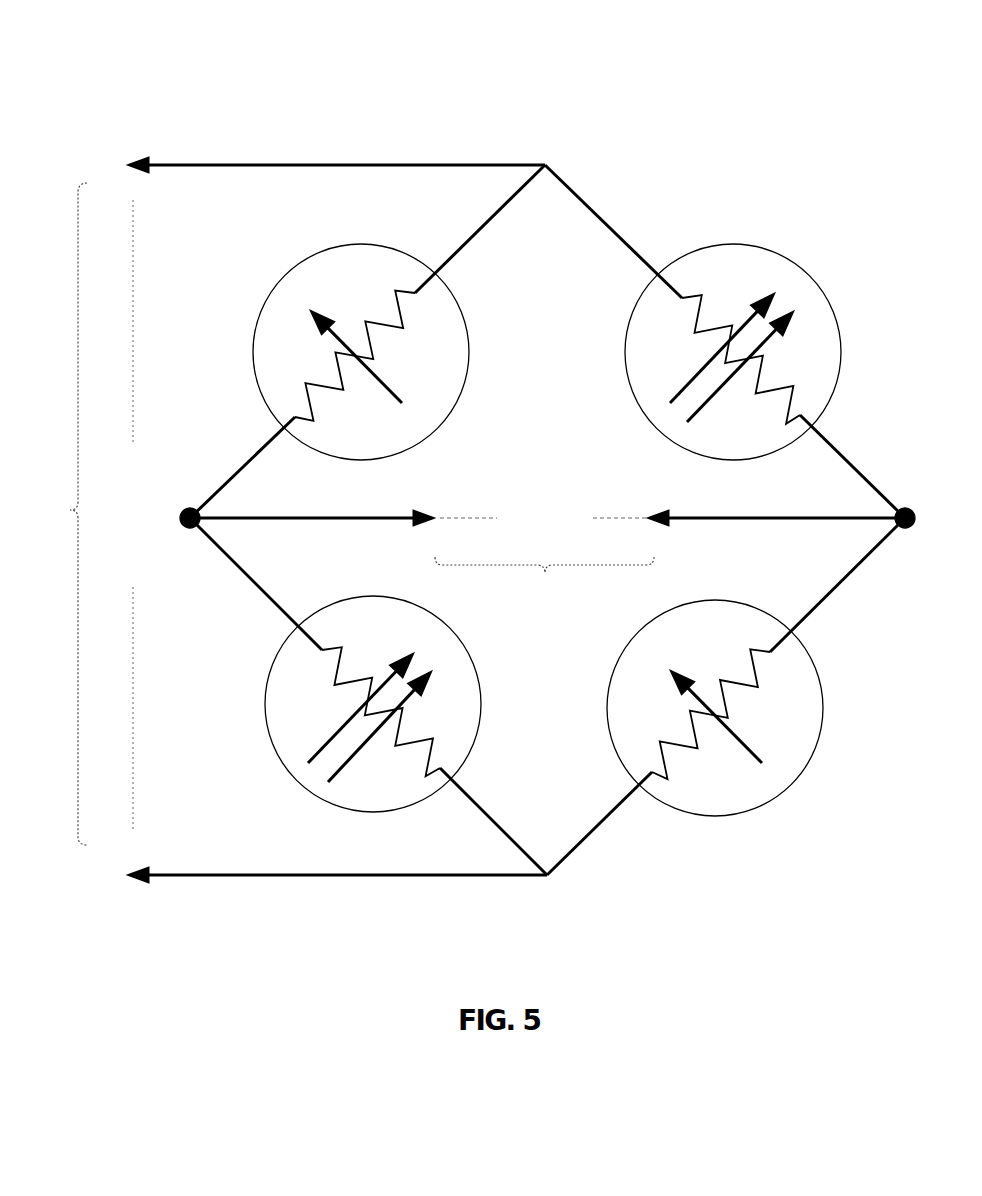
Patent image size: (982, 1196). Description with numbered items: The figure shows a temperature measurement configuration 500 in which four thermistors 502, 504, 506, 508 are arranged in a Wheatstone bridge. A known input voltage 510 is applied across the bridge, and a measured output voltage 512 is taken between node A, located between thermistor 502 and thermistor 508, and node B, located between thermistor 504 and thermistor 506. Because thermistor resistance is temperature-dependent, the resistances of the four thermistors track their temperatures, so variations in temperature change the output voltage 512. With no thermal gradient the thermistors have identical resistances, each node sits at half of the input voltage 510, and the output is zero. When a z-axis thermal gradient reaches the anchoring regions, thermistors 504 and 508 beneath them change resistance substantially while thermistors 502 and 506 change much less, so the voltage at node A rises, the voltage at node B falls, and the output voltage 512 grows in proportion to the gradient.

The temperature measurement configuration 500 is at (528, 47).
The thermistor 502 is at (263, 296).
The thermistor 504 is at (818, 262).
The thermistor 506 is at (812, 766).
The thermistor 508 is at (281, 763).
The voltage 510 is at (77, 514).
The voltage 512 is at (544, 552).